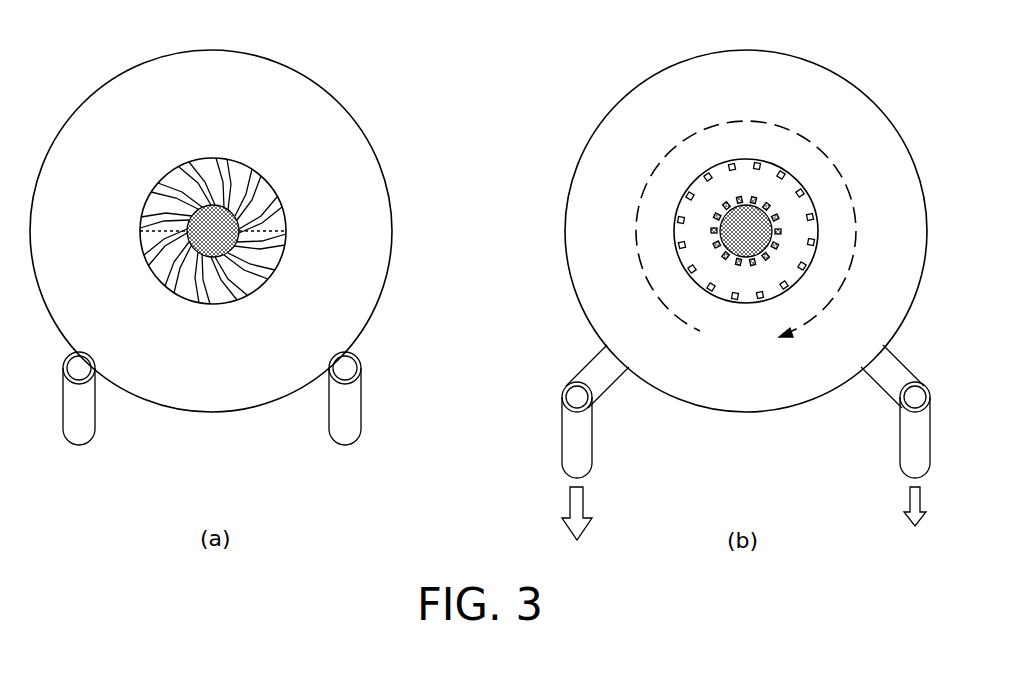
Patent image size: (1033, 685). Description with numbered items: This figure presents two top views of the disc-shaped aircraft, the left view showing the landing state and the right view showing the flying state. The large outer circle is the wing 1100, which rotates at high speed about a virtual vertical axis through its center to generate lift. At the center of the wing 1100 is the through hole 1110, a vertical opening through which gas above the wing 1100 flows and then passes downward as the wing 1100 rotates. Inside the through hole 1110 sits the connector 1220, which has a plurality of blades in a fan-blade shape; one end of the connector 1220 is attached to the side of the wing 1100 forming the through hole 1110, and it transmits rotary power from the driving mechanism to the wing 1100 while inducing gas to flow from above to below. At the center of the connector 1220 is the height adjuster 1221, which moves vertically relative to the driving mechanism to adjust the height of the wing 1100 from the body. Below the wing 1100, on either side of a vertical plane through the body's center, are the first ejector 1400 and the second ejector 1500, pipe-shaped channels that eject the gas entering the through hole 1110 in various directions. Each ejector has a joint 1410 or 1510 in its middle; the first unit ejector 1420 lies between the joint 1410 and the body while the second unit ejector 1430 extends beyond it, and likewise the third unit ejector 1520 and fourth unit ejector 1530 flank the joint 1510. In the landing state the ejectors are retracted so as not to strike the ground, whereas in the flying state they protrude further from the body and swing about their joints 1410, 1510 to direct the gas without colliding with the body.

The wing 1100 is at (143, 75).
The through hole 1110 is at (147, 198).
The connector 1220 is at (267, 177).
The height adjuster 1221 is at (213, 205).
The first ejector 1400 is at (493, 340).
The joint 1410 is at (103, 388).
The first unit ejector 1420 is at (602, 370).
The second unit ejector 1430 is at (80, 427).
The second ejector 1500 is at (820, 415).
The joint 1510 is at (327, 377).
The third unit ejector 1520 is at (887, 380).
The fourth unit ejector 1530 is at (346, 427).